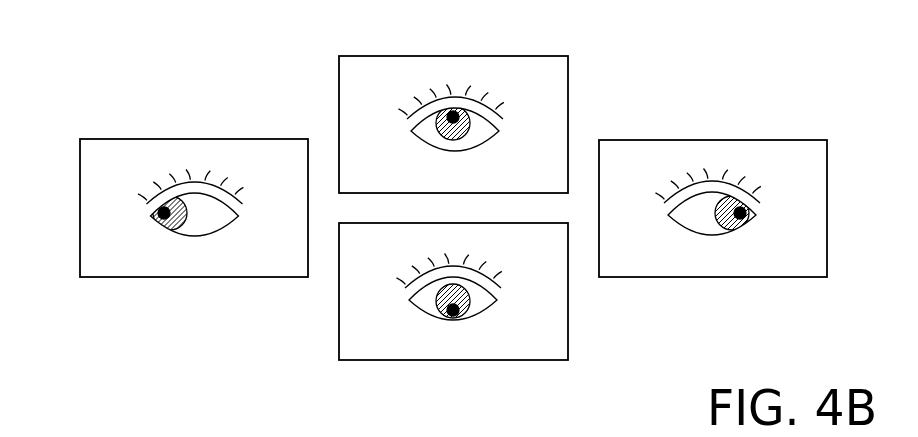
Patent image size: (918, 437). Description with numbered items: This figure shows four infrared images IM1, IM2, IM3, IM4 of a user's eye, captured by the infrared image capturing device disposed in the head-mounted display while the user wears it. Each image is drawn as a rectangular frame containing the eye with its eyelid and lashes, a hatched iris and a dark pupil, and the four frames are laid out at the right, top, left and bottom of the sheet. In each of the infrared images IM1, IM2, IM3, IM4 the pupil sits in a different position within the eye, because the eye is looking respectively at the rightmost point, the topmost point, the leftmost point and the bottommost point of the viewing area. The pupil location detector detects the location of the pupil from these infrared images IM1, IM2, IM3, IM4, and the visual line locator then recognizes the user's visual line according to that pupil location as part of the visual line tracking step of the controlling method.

The infrared image IM1 is at (777, 140).
The infrared image IM2 is at (516, 56).
The infrared image IM3 is at (158, 139).
The infrared image IM4 is at (517, 361).